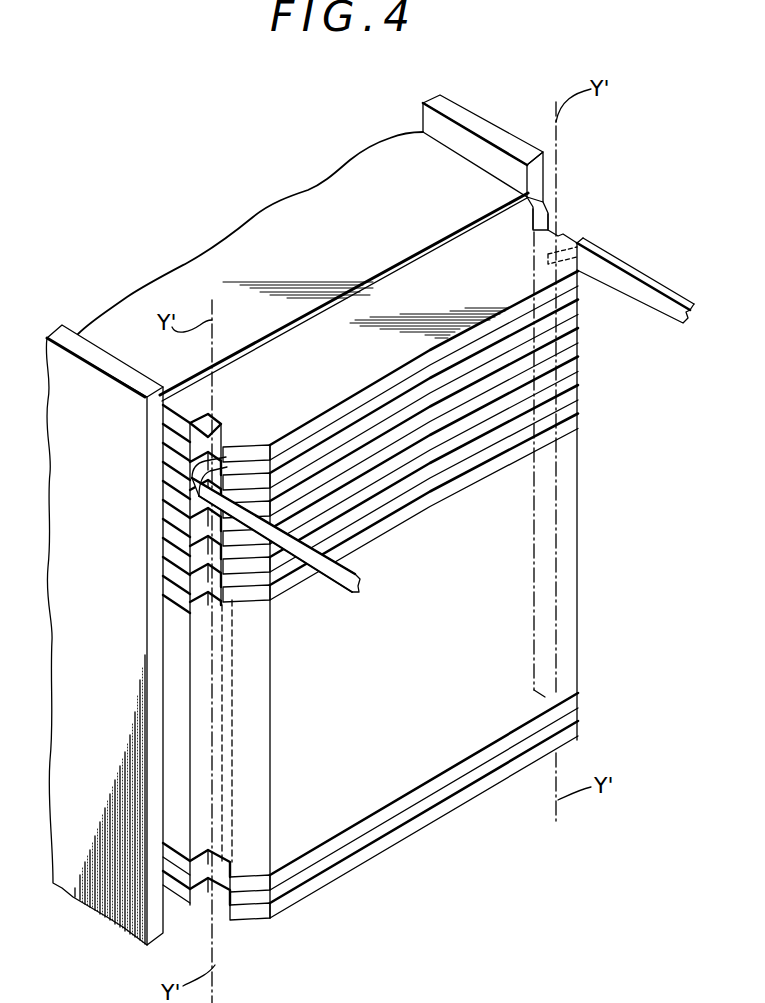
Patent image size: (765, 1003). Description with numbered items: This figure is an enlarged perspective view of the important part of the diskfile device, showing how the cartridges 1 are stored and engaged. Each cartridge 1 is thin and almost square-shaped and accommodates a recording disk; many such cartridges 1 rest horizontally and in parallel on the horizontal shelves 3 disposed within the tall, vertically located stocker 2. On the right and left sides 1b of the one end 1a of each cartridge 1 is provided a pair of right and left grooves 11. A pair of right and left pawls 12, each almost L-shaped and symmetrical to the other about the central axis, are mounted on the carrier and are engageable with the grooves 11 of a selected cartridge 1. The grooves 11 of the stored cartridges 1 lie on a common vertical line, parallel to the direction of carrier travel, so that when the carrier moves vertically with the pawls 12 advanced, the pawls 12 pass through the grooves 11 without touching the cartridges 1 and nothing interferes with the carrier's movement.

The cartridge 1 is at (357, 551).
The one end of the cartridge 1a is at (393, 522).
The right and left sides of the one end of the cartridge 1b is at (172, 457).
The stocker 2 is at (487, 133).
The shelves 3 is at (318, 207).
The grooves 11 is at (560, 234).
The pawls 12 is at (333, 578).